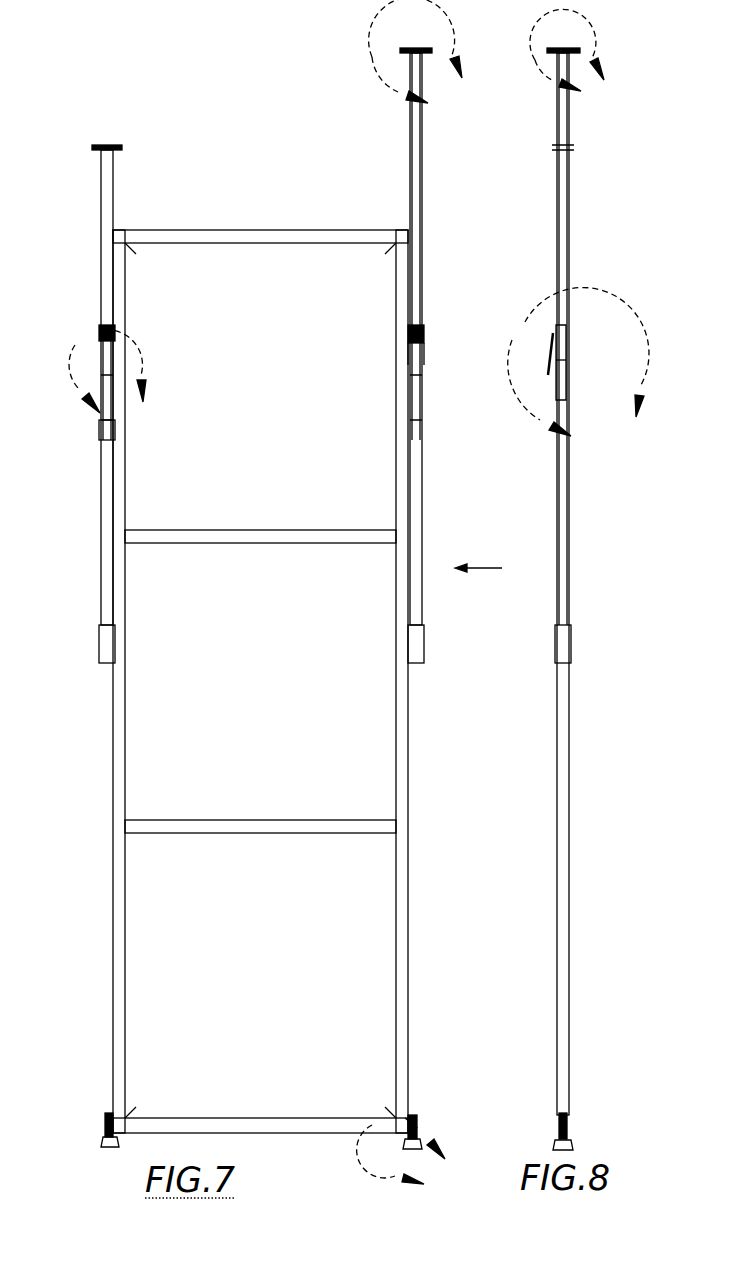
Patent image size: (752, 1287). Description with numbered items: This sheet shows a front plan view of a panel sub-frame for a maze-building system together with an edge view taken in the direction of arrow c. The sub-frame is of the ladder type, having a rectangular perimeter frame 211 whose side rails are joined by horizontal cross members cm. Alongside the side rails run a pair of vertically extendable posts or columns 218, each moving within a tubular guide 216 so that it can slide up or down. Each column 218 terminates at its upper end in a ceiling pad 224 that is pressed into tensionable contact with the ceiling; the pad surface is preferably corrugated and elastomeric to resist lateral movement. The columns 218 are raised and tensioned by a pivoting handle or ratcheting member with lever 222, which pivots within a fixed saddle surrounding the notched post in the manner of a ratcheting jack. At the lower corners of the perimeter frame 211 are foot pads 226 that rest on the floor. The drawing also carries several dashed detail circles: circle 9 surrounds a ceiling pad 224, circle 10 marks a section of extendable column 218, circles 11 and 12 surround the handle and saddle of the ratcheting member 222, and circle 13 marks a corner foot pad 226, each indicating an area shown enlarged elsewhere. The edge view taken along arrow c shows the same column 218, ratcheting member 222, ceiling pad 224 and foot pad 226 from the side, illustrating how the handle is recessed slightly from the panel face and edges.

In FIG. 7, the perimeter frame 211 is at (112, 808).
In FIG. 7, the cross member cm is at (297, 540).
In FIG. 7, the column 218 is at (112, 203).
In FIG. 8, the column 218 is at (563, 581).
In FIG. 7, the ceiling pad 224 is at (104, 145).
In FIG. 7, the ratcheting member with lever 222 is at (418, 365).
In FIG. 8, the ratcheting member with lever 222 is at (568, 352).
In FIG. 7, the guide 216 is at (102, 432).
In FIG. 8, the guide 216 is at (557, 648).
In FIG. 7, the foot pad 226 is at (108, 1138).
In FIG. 8, the foot pad 226 is at (570, 1140).
In FIG. 7, the detail circle 10 is at (372, 57).
In FIG. 7, the detail circle 12 is at (78, 353).
In FIG. 7, the detail circle 13 is at (372, 1160).
In FIG. 8, the detail circle 9 is at (540, 68).
In FIG. 8, the detail circle 11 is at (597, 302).
In FIG. 7, the arrow c is at (491, 575).